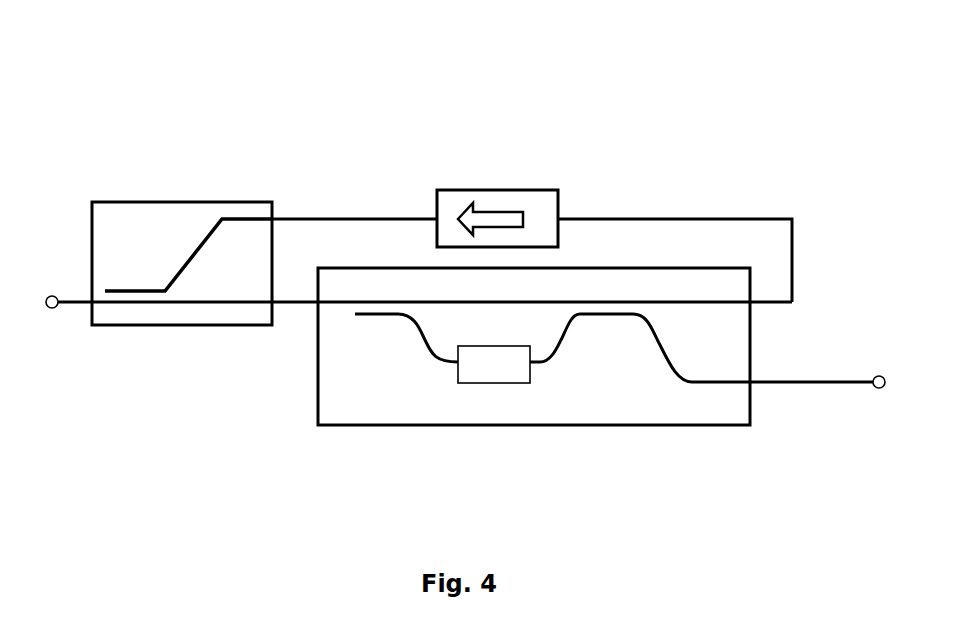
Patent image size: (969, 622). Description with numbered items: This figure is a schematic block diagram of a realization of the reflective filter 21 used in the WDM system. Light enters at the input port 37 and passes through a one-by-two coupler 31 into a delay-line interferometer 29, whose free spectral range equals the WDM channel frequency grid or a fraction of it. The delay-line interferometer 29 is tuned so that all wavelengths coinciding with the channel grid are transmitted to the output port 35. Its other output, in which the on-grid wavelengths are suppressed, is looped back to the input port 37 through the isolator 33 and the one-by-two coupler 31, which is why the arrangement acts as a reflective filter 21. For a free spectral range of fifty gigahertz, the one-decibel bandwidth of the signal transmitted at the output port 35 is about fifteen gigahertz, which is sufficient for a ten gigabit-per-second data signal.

The reflective filter 21 is at (392, 93).
The delay-line interferometer 29 is at (452, 418).
The 1×2 coupler 31 is at (148, 295).
The isolator 33 is at (548, 193).
The output port 35 is at (879, 375).
The input port 37 is at (52, 294).